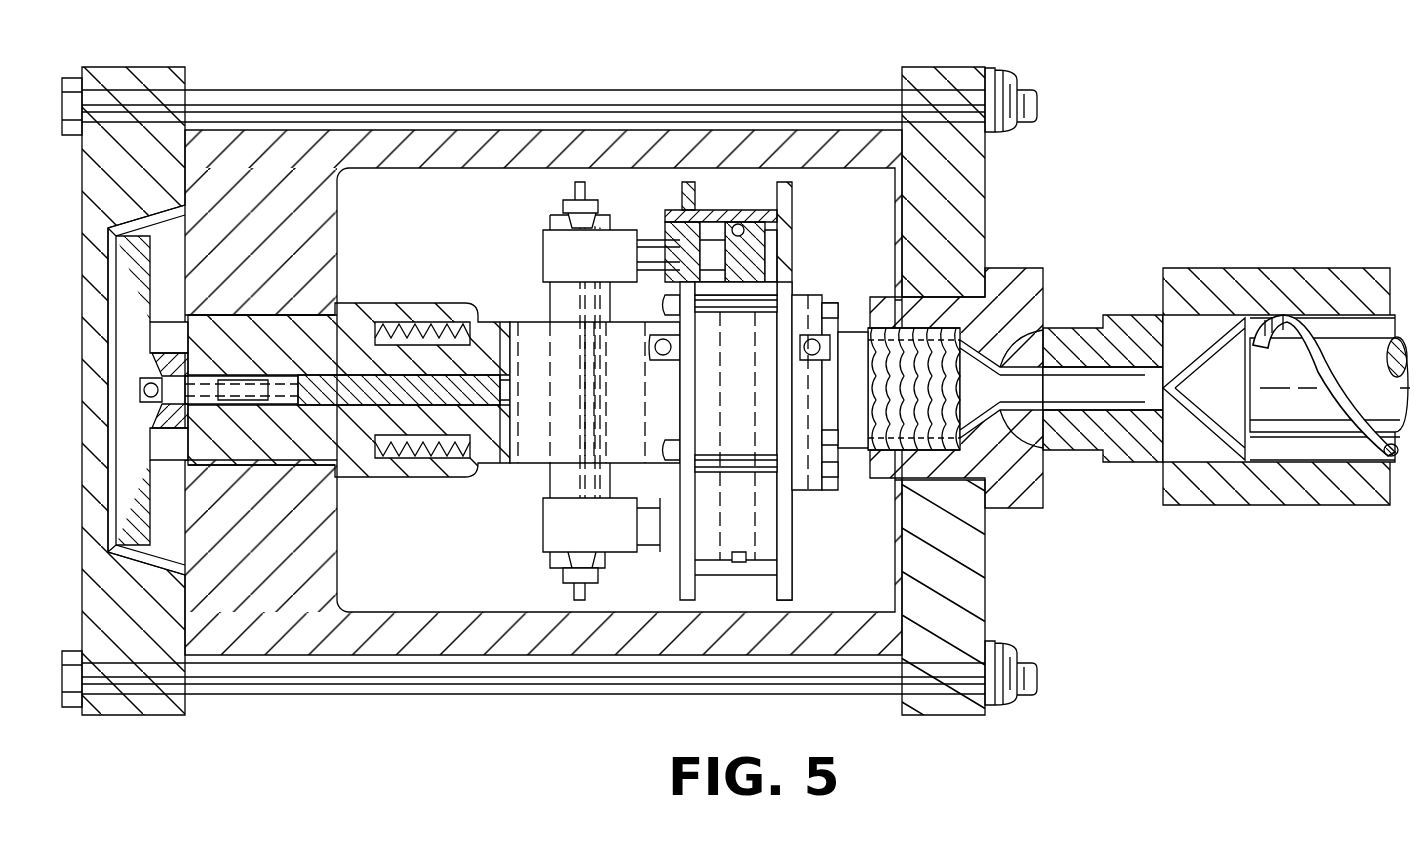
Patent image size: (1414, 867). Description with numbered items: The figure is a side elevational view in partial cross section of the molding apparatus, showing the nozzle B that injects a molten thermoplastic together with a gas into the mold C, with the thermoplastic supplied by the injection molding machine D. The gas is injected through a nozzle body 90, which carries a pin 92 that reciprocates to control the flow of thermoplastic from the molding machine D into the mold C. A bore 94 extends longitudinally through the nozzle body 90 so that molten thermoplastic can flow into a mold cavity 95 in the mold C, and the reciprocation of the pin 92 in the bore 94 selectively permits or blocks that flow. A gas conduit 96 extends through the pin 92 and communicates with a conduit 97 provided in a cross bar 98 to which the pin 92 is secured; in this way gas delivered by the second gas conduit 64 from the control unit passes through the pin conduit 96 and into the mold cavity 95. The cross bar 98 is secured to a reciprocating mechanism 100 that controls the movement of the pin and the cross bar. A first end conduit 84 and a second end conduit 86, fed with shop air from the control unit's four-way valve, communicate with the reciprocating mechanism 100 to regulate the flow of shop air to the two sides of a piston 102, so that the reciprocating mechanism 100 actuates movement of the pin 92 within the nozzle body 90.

The mold C is at (386, 136).
The nozzle B is at (541, 320).
The injection molding machine D is at (1192, 258).
The second gas conduit 64 is at (573, 190).
The first end conduit 84 is at (660, 336).
The second end conduit 86 is at (815, 338).
The nozzle body 90 is at (392, 302).
The pin 92 is at (325, 410).
The bore 94 is at (298, 352).
The mold cavity 95 is at (150, 286).
The gas conduit 96 is at (345, 395).
The conduit 97 is at (580, 528).
The cross bar 98 is at (548, 478).
The reciprocating mechanism 100 is at (795, 525).
The piston 102 is at (745, 240).